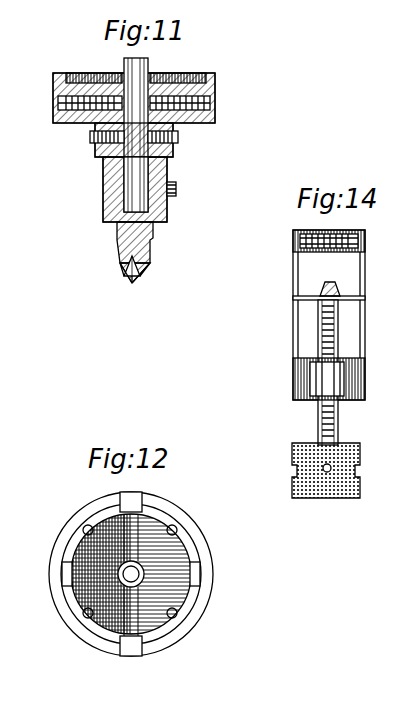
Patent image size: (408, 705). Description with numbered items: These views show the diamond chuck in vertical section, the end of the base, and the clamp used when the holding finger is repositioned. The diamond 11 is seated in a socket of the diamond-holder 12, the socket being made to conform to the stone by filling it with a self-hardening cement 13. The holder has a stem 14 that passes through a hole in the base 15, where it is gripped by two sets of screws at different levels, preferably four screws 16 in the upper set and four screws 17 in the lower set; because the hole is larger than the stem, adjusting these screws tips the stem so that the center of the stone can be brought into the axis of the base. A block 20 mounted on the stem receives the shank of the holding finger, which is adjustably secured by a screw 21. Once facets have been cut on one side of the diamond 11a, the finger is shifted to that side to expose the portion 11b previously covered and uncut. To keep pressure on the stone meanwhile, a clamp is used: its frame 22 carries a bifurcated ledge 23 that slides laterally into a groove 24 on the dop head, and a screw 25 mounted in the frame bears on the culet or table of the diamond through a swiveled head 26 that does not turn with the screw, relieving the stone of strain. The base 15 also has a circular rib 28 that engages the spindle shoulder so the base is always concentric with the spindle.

In FIG. 11, the diamond 11 is at (143, 272).
In FIG. 11, the side of the diamond 11a is at (130, 274).
In FIG. 11, the portion of the diamond 11b is at (135, 283).
In FIG. 11, the diamond-holder 12 is at (148, 258).
In FIG. 11, the self-hardening cement 13 is at (128, 249).
In FIG. 11, the stem 14 is at (149, 72).
In FIG. 12, the stem 14 is at (128, 578).
In FIG. 11, the base 15 is at (214, 84).
In FIG. 11, the screws 16 is at (56, 104).
In FIG. 12, the screws 16 is at (62, 603).
In FIG. 11, the screws 17 is at (90, 137).
In FIG. 11, the block 20 is at (104, 178).
In FIG. 11, the screw 21 is at (177, 188).
In FIG. 14, the screw 21 is at (303, 300).
In FIG. 14, the frame 22 is at (357, 331).
In FIG. 14, the bifurcated ledge 23 is at (365, 237).
In FIG. 11, the groove 24 is at (116, 236).
In FIG. 14, the screw 25 is at (340, 421).
In FIG. 14, the head 26 is at (341, 290).
In FIG. 11, the circular rib 28 is at (204, 76).
In FIG. 12, the circular rib 28 is at (62, 547).